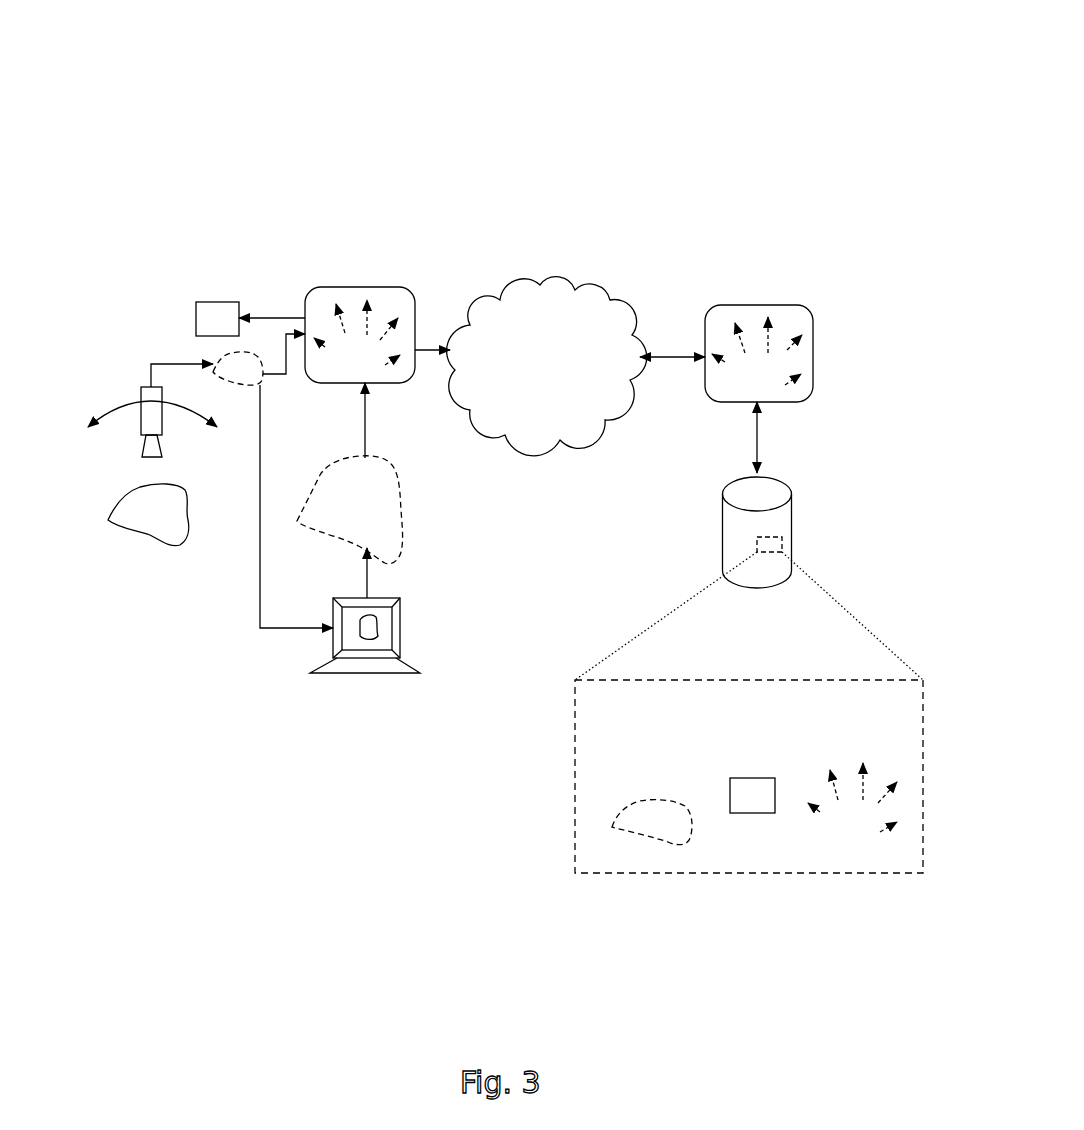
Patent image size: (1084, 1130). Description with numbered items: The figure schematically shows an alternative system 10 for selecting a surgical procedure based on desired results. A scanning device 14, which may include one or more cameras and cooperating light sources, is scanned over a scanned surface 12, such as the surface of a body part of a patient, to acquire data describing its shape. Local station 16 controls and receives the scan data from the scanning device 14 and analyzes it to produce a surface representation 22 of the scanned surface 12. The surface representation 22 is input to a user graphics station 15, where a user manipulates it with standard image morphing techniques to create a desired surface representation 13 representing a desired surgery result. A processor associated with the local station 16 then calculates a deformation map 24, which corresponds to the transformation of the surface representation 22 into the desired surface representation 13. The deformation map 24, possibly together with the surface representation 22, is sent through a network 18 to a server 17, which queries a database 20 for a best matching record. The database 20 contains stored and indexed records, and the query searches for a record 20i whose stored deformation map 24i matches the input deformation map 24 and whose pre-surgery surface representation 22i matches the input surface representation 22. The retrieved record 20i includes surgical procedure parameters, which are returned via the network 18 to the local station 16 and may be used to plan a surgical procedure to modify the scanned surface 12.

The system 10 is at (638, 58).
The scanned surface 12 is at (185, 508).
The desired surface representation 13 is at (400, 508).
The scanning device 14 is at (142, 383).
The user graphics station 15 is at (397, 612).
The local station 16 is at (390, 287).
The server 17 is at (815, 327).
The network 18 is at (575, 430).
The database 20 is at (763, 473).
The record 20i is at (773, 680).
The surface representation 22 is at (223, 357).
The pre-surgery surface representation 22i is at (657, 837).
The deformation map 24 is at (352, 300).
The deformation map 24i is at (875, 842).